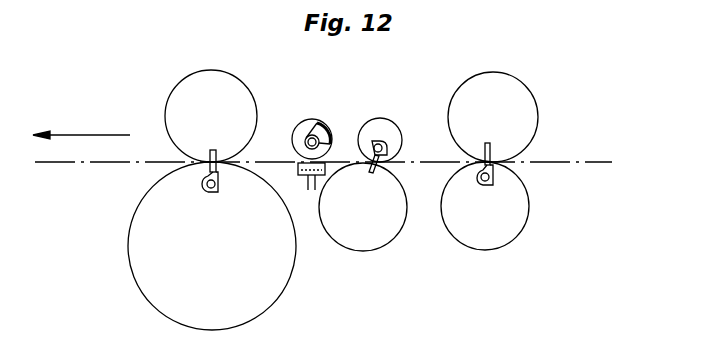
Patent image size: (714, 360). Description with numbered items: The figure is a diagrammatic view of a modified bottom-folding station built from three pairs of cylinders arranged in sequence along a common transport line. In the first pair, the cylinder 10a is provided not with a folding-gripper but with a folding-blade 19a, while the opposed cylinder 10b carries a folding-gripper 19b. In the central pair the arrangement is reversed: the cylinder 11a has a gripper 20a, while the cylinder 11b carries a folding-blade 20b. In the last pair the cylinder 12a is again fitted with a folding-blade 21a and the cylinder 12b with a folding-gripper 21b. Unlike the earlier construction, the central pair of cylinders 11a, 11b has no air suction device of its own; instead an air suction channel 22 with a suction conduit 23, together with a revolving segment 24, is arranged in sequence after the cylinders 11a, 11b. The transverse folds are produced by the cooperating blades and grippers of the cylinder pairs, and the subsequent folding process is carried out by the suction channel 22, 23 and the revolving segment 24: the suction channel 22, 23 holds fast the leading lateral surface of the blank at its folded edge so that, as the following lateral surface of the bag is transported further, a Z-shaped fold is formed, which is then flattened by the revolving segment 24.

The cylinder 10a is at (504, 88).
The cylinder 10b is at (502, 232).
The cylinder 11a is at (383, 126).
The cylinder 11b is at (373, 237).
The cylinder 12a is at (196, 88).
The cylinder 12b is at (148, 275).
The folding-blade 19a is at (492, 147).
The folding-gripper 19b is at (493, 171).
The gripper 20a is at (386, 146).
The folding-blade 20b is at (374, 167).
The folding-blade 21a is at (198, 161).
The folding-gripper 21b is at (206, 180).
The air suction channel 22 is at (300, 164).
The suction conduit 23 is at (313, 190).
The revolving segment 24 is at (320, 121).